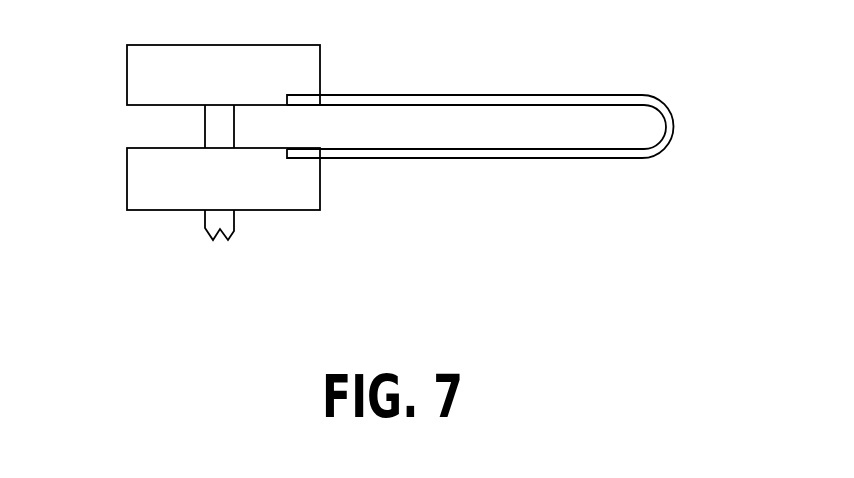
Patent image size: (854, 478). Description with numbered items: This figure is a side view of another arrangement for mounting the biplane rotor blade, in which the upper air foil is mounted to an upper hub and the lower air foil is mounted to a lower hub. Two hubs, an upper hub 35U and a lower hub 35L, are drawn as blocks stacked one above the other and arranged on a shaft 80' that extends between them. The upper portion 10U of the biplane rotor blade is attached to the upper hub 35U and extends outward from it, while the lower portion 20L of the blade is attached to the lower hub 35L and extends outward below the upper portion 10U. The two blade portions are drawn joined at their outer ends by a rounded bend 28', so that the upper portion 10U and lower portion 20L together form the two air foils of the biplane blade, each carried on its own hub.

The upper hub 35U is at (148, 80).
The lower hub 35L is at (142, 182).
The shaft 80' is at (153, 126).
The upper portion of biplane rotor blade 10U is at (438, 95).
The lower portion of biplane rotor blade 20L is at (438, 158).
The fold / bend 28' is at (691, 126).